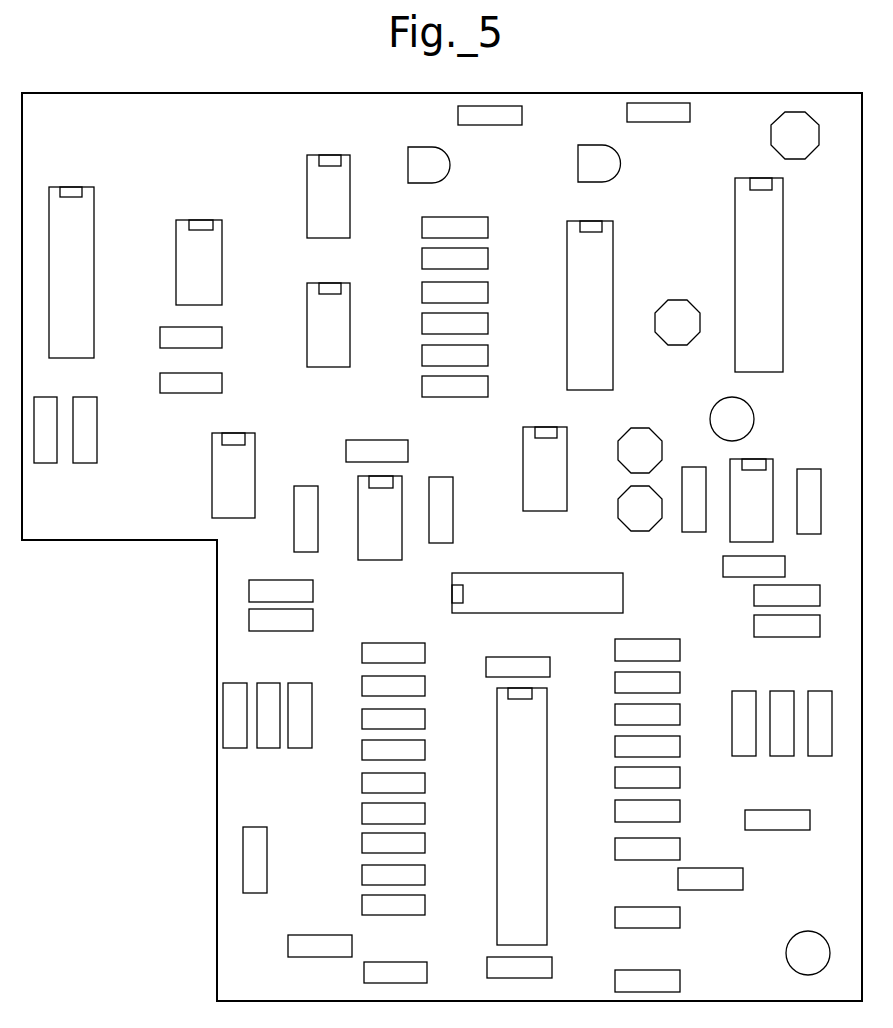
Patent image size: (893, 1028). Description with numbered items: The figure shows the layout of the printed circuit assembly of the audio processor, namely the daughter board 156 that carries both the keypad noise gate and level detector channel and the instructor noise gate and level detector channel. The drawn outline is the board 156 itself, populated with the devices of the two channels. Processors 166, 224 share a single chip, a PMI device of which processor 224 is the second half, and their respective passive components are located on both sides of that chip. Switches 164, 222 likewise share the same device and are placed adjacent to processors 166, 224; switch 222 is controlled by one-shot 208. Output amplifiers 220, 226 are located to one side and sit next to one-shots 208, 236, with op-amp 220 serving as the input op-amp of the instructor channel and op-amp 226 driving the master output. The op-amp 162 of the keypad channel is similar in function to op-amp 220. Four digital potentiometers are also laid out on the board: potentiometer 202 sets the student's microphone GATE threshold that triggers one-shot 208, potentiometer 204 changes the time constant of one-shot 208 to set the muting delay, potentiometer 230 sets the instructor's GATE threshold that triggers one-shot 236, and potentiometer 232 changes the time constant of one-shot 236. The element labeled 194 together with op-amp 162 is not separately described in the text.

The daughter board 156 is at (147, 92).
The digital potentiometer 202 is at (181, 220).
The digital potentiometer 204 is at (307, 169).
The digital potentiometer 232 is at (307, 313).
The digital potentiometer 230 is at (255, 452).
The one-shot 208 is at (713, 261).
The one-shot 236 is at (745, 178).
The op-amp 162 is at (377, 535).
The microprocessor circuit 194 is at (417, 578).
The switch 164 is at (548, 576).
The control switch 222 is at (624, 582).
The processor 166 is at (547, 816).
The processor 224 is at (548, 826).
The input op-amp 220 is at (786, 479).
The op-amp 226 is at (752, 459).